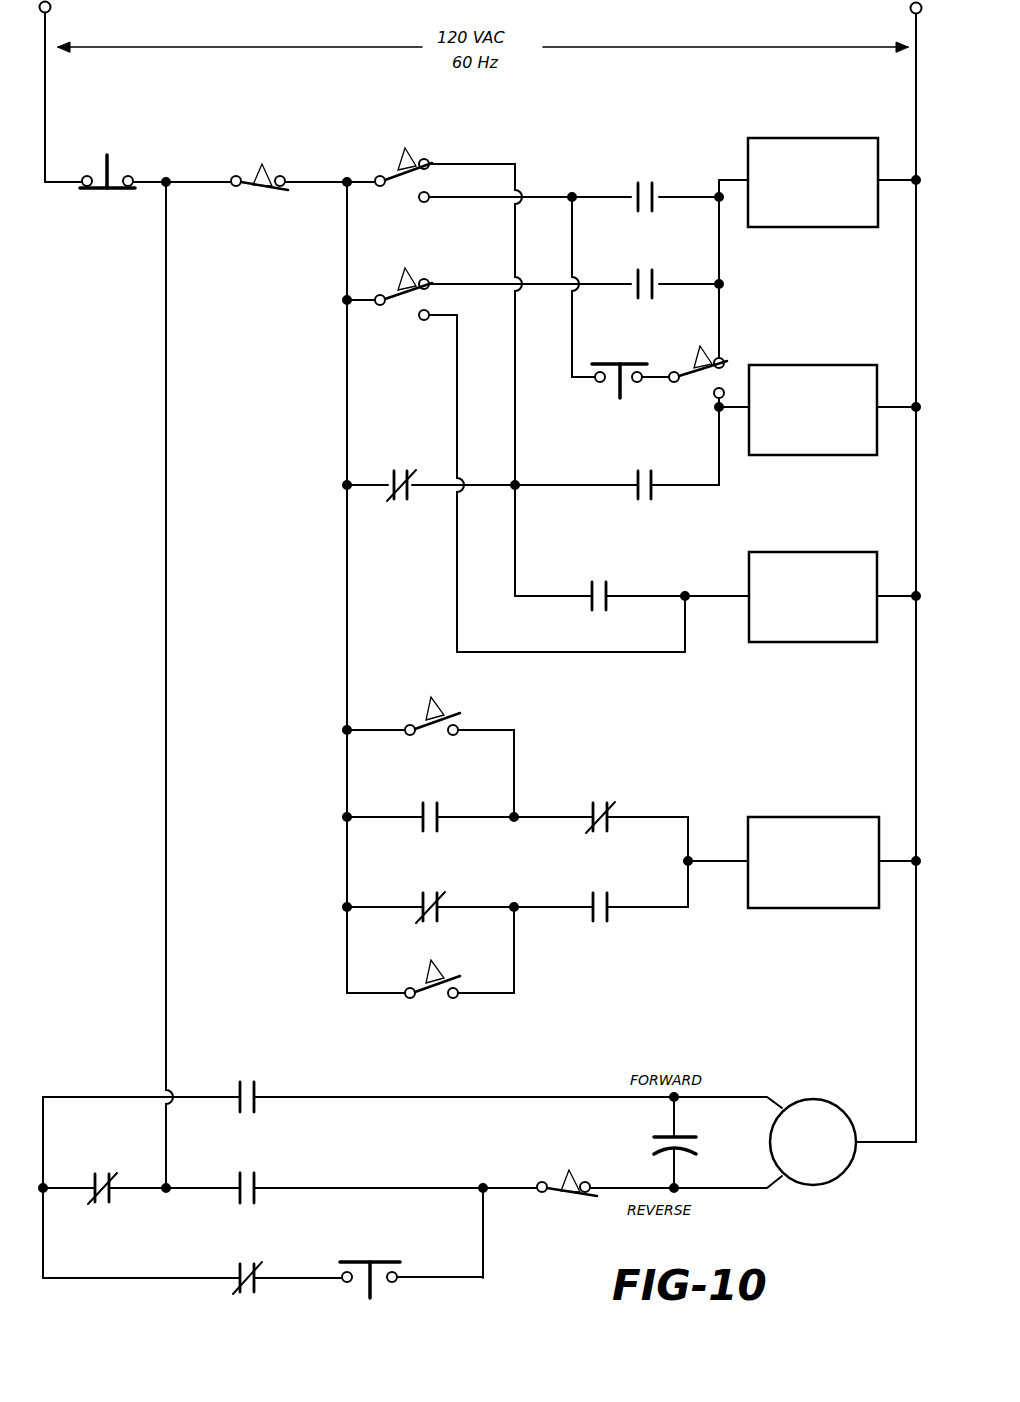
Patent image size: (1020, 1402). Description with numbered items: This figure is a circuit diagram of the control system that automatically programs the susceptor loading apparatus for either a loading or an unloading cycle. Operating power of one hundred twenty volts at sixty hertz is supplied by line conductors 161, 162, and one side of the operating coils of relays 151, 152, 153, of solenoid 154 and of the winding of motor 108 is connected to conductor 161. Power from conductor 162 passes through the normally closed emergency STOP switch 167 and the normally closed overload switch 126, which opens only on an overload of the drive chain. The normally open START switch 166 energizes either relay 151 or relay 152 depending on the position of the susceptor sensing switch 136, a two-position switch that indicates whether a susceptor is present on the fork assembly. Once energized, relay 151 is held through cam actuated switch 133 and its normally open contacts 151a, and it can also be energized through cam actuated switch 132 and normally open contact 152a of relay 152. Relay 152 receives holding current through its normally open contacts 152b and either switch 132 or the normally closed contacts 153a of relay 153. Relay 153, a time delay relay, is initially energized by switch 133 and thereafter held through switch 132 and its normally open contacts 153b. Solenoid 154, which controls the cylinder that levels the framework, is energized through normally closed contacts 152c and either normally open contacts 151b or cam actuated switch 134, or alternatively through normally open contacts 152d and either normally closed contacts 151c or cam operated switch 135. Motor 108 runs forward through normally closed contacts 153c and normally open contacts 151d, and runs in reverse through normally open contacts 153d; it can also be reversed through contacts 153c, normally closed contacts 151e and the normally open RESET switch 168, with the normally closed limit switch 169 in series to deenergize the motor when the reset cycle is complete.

The line conductor 162 is at (47, 110).
The line conductor 161 is at (915, 94).
The emergency STOP switch 167 is at (107, 191).
The overload switch 126 is at (240, 190).
The cam actuated switch 132 is at (396, 164).
The cam actuated switch 133 is at (419, 276).
The cam actuated switch 134 is at (453, 690).
The cam operated switch 135 is at (411, 984).
The susceptor sensing switch 136 is at (704, 358).
The START switch 166 is at (619, 388).
The RESET switch 168 is at (382, 1258).
The limit switch 169 is at (556, 1180).
The relay 151 is at (790, 124).
The relay 152 is at (805, 364).
The time delay relay 153 is at (816, 546).
The solenoid 154 is at (814, 800).
The drive motor and transmission assembly 108 is at (832, 1080).
The normally open contacts of relay 151 151a is at (648, 268).
The normally open contacts of relay 151 151b is at (462, 795).
The normally closed contacts of relay 151 151c is at (416, 900).
The normally open contacts of relay 151 151d is at (248, 1082).
The normally closed contacts of relay 151 151e is at (252, 1248).
The normally open contact of relay 152 152a is at (648, 181).
The normally open contacts of relay 152 152b is at (651, 478).
The normally closed contacts of relay 152 152c is at (588, 808).
The normally open contacts of relay 152 152d is at (598, 926).
The normally closed contacts of relay 153 153a is at (388, 478).
The normally open contacts of relay 153 153b is at (626, 576).
The normally closed contacts of relay 153 153c is at (103, 1172).
The normally open contacts of relay 153 153d is at (246, 1174).